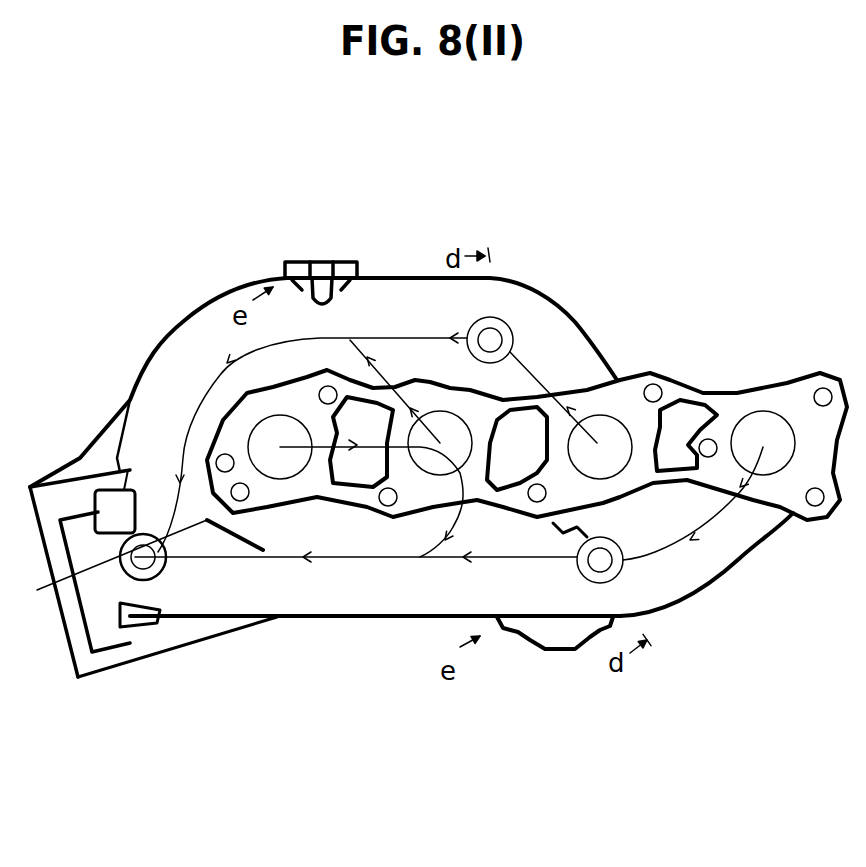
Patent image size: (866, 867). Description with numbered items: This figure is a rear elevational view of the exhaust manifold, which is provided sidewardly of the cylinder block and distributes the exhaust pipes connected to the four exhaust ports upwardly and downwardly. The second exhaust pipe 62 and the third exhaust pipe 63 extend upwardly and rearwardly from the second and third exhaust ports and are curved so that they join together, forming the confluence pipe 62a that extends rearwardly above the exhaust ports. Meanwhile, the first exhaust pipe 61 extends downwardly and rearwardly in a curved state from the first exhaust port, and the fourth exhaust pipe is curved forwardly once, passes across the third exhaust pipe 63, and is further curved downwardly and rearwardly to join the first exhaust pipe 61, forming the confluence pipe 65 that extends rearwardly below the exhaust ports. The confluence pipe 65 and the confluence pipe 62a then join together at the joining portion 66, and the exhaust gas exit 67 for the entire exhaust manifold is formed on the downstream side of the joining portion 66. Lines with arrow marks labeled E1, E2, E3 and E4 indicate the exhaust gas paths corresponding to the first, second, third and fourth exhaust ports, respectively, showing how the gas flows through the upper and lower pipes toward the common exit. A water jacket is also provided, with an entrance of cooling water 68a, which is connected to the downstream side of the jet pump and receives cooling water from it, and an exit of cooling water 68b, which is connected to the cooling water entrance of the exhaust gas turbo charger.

The first exhaust pipe 61 is at (767, 557).
The second exhaust pipe 62 is at (597, 350).
The confluence pipe 62a is at (165, 343).
The third exhaust pipe 63 is at (432, 352).
The confluence pipe 65 is at (300, 595).
The joining portion 66 is at (200, 517).
The exhaust gas exit 67 is at (63, 627).
The entrance of cooling water 68a is at (577, 647).
The exit of cooling water 68b is at (318, 262).
The exhaust gas path E1 is at (363, 655).
The exhaust gas path E2 is at (447, 227).
The exhaust gas path E3 is at (400, 397).
The exhaust gas path E4 is at (481, 517).